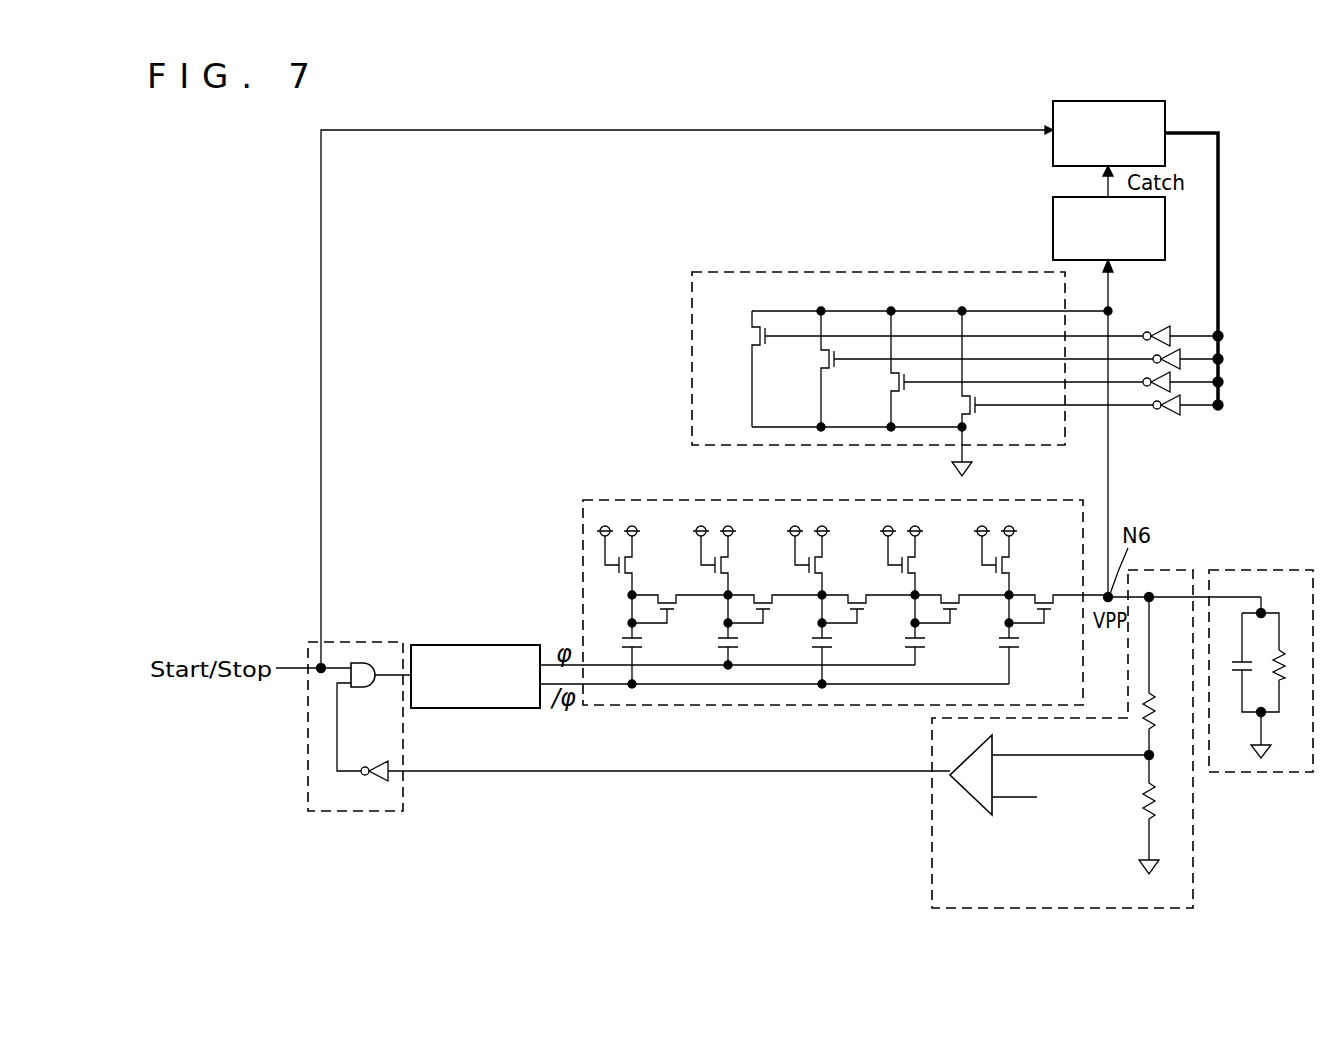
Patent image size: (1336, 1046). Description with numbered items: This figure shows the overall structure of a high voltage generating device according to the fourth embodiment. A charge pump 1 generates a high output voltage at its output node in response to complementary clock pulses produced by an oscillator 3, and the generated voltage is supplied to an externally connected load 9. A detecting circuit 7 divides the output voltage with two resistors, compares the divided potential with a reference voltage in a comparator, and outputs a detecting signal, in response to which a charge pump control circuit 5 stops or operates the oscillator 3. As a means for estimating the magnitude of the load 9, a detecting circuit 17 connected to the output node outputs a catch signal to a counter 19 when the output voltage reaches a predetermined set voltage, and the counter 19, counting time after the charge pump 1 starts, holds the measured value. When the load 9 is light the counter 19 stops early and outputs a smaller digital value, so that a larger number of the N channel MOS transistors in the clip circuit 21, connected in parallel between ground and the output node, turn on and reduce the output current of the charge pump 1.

The charge pump 1 is at (582, 546).
The oscillator 3 is at (497, 645).
The charge pump control circuit 5 is at (354, 640).
The detecting circuit 7 is at (1167, 568).
The load 9 is at (1272, 568).
The detecting circuit 17 is at (1050, 219).
The counter 19 is at (1165, 113).
The clip circuit 21 is at (690, 298).